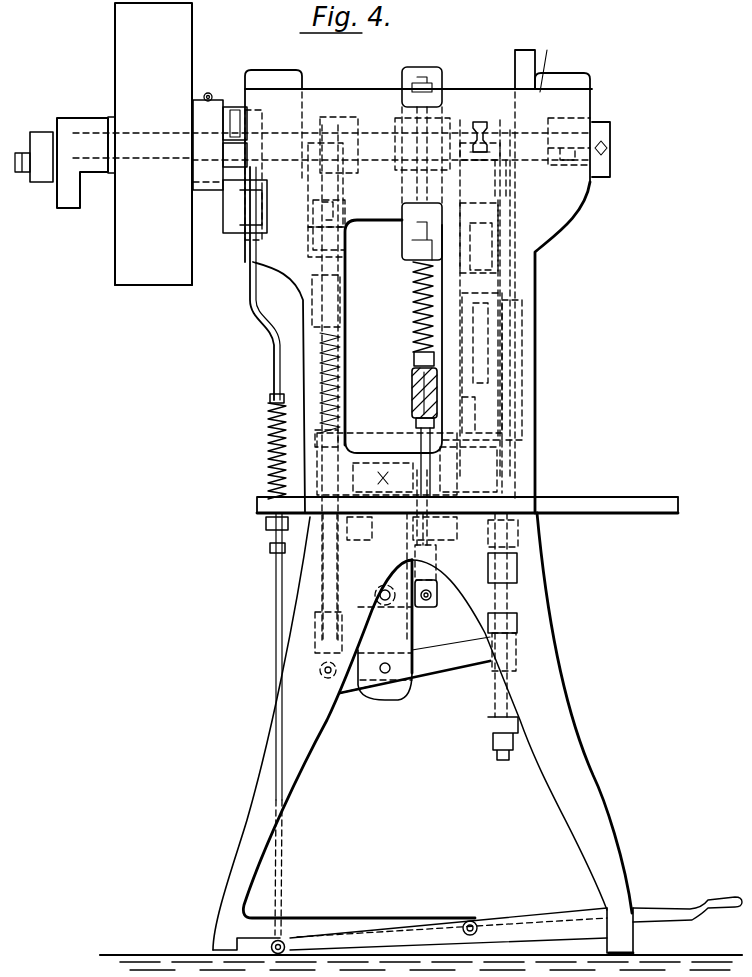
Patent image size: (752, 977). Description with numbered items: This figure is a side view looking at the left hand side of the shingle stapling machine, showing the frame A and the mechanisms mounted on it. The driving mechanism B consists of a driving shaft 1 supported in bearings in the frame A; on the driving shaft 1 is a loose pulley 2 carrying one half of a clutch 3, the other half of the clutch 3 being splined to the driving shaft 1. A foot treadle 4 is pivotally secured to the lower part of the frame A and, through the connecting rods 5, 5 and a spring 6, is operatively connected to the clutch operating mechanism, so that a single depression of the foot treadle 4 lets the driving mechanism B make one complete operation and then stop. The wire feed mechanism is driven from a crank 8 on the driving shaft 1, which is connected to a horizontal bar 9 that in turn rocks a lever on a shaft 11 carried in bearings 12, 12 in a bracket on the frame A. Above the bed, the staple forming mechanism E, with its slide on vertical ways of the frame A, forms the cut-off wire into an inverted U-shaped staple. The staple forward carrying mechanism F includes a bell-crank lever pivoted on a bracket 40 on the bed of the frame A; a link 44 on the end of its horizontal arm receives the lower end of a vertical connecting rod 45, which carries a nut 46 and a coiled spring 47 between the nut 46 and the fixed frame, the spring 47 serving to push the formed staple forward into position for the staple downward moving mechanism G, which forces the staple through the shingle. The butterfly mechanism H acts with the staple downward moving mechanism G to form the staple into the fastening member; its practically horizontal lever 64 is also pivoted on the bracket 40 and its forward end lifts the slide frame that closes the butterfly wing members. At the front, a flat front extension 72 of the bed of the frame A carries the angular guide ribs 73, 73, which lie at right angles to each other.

The driving shaft 1 is at (270, 139).
The loose pulley 2 is at (154, 283).
The clutch 3 is at (233, 110).
The foot treadle 4 is at (689, 912).
The connecting rods 5 is at (272, 367).
The spring 6 is at (270, 455).
The crank 8 is at (72, 207).
The horizontal bar 9 is at (44, 134).
The shaft 11 is at (422, 78).
The bearings 12 is at (330, 118).
The bracket 40 is at (415, 642).
The link 44 is at (446, 592).
The vertical connecting rod 45 is at (416, 428).
The nut 46 is at (414, 361).
The coiled spring 47 is at (413, 293).
The horizontal lever 64 is at (366, 690).
The flat front extension 72 is at (645, 514).
The angular guide ribs 73 is at (622, 503).
The frame A is at (547, 208).
The driving mechanism B is at (153, 144).
The staple forming mechanism E is at (482, 344).
The staple forward carrying mechanism F is at (412, 396).
The staple downward moving mechanism G is at (505, 487).
The butterfly mechanism H is at (330, 380).